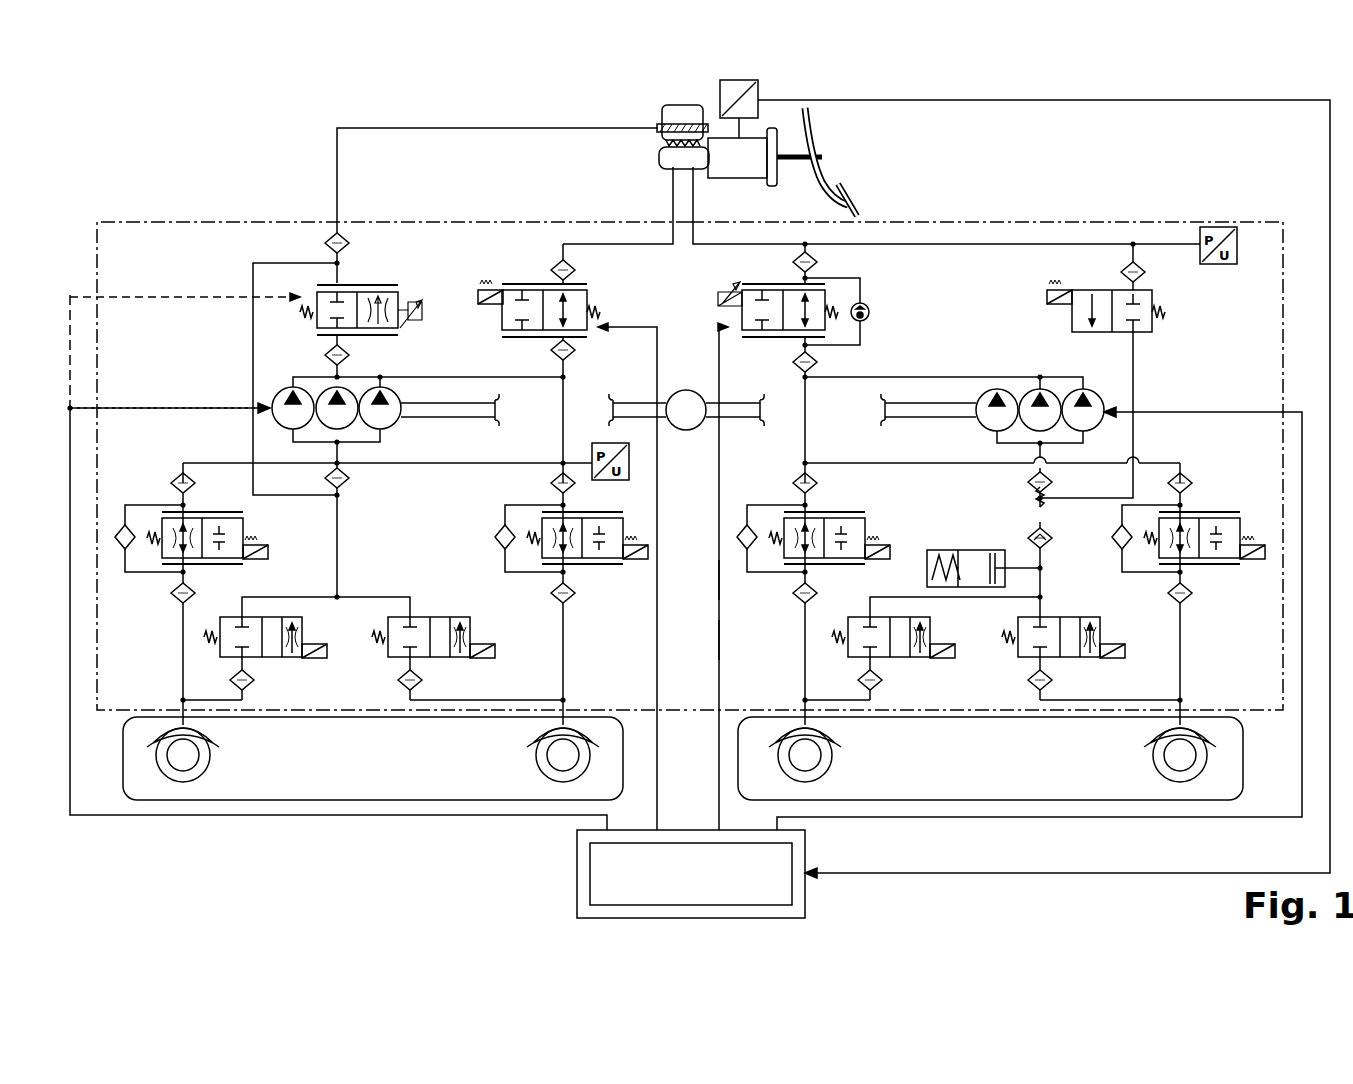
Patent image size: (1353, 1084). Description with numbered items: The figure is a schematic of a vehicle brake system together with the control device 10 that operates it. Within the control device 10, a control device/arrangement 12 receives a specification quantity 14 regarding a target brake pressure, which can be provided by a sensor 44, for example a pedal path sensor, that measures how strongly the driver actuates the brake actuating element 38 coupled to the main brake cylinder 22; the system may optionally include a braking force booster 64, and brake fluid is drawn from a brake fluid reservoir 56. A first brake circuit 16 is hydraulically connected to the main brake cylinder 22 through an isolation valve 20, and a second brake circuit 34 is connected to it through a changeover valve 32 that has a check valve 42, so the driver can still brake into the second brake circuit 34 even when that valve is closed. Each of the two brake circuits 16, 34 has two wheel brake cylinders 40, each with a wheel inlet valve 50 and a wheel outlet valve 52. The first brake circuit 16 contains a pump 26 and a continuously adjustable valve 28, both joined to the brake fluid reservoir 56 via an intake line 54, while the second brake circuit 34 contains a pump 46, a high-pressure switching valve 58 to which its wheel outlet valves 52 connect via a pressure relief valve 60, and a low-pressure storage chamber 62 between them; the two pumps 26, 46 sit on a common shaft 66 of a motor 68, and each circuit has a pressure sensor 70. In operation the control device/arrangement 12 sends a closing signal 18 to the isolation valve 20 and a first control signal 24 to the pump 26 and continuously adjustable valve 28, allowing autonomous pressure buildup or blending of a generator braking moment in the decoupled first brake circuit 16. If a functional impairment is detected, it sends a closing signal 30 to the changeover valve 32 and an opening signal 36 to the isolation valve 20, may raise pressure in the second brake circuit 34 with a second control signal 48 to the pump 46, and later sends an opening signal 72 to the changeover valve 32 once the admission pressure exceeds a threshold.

The control device 10 is at (577, 858).
The control device/arrangement 12 is at (590, 892).
The specification quantity 14 is at (1000, 875).
The first brake circuit 16 is at (605, 640).
The closing signal 18 is at (652, 325).
The isolation valve 20 is at (587, 295).
The main brake cylinder 22 is at (662, 160).
The first control signal 24 is at (443, 817).
The pump 26 is at (275, 400).
The continuously adjustable valve 28 is at (365, 290).
The closing signal 30 is at (717, 568).
The changeover valve 32 is at (773, 338).
The second brake circuit 34 is at (755, 640).
The opening signal 36 is at (655, 362).
The brake actuating element 38 is at (823, 170).
The wheel brake cylinders 40 is at (211, 733).
The check valve 42 is at (870, 310).
The sensor 44 is at (721, 80).
The pump 46 is at (975, 430).
The second control signal 48 is at (935, 818).
The wheel inlet valve 50 is at (245, 520).
The wheel outlet valve 52 is at (435, 617).
The intake line 54 is at (456, 130).
The brake fluid reservoir 56 is at (662, 112).
The high-pressure switching valve 58 is at (1072, 325).
The pressure relief valve 60 is at (1032, 529).
The storage chamber 62 is at (967, 550).
The braking force booster 64 is at (738, 170).
The common shaft 66 is at (736, 422).
The motor 68 is at (686, 430).
The pressure sensor 70 is at (603, 443).
The opening signal 72 is at (717, 635).